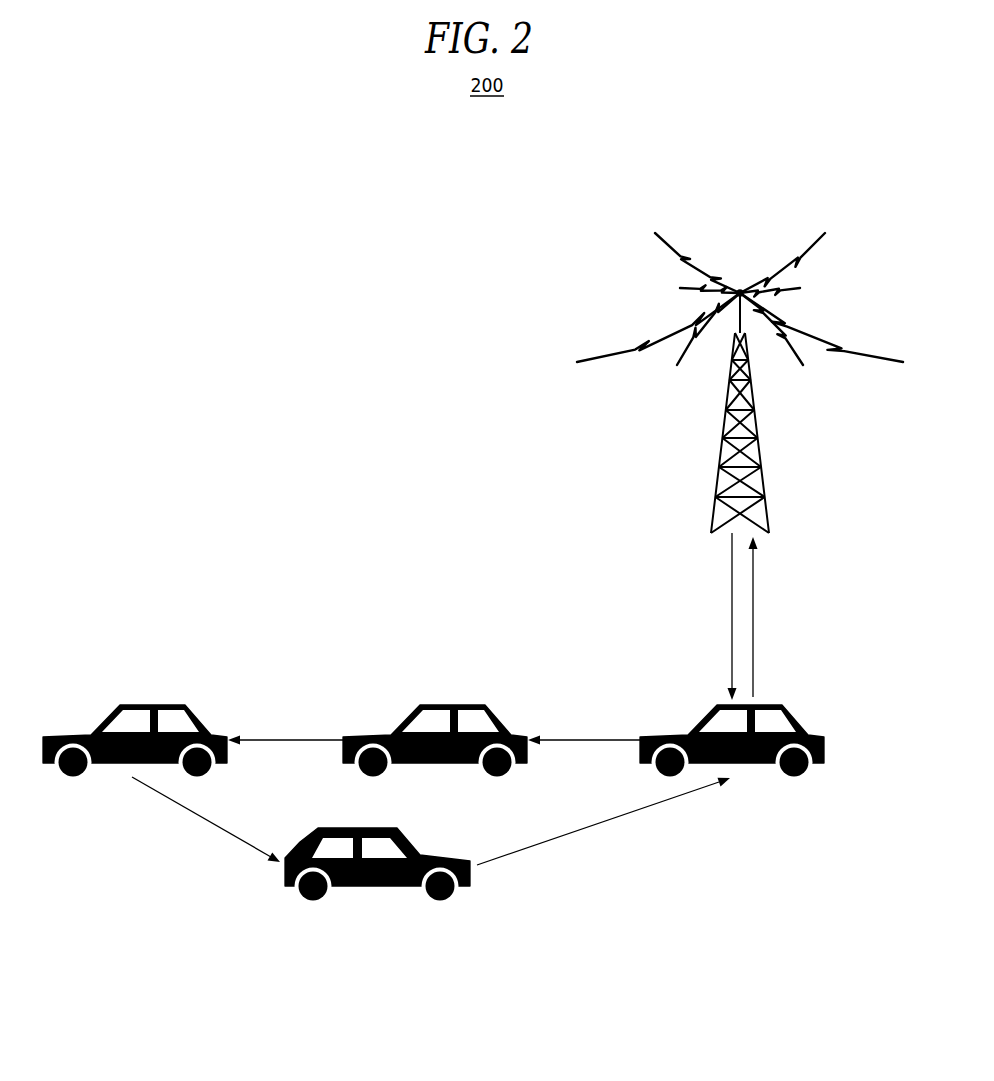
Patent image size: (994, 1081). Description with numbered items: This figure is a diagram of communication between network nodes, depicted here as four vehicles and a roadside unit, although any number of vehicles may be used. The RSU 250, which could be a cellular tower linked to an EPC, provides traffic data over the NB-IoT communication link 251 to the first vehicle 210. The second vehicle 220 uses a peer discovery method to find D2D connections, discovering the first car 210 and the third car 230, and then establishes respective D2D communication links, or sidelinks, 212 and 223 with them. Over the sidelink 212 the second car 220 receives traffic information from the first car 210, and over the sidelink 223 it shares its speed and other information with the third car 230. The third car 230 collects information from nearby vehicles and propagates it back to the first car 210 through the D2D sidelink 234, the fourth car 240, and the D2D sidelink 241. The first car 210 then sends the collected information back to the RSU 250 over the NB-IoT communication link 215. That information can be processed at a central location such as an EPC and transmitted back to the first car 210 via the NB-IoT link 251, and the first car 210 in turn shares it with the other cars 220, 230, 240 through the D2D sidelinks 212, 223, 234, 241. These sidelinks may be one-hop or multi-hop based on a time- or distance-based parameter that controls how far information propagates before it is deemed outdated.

The first vehicle 210 is at (810, 729).
The second vehicle 220 is at (429, 697).
The third car 230 is at (128, 697).
The fourth car 240 is at (347, 931).
The RSU 250 is at (782, 491).
The NB-IoT communication link 251 is at (670, 634).
The NB-IoT communication link 215 is at (768, 634).
The D2D communication link (sidelink) 212 is at (569, 731).
The D2D communication link (sidelink) 223 is at (264, 731).
The D2D sidelink 234 is at (147, 862).
The D2D sidelink 241 is at (583, 869).